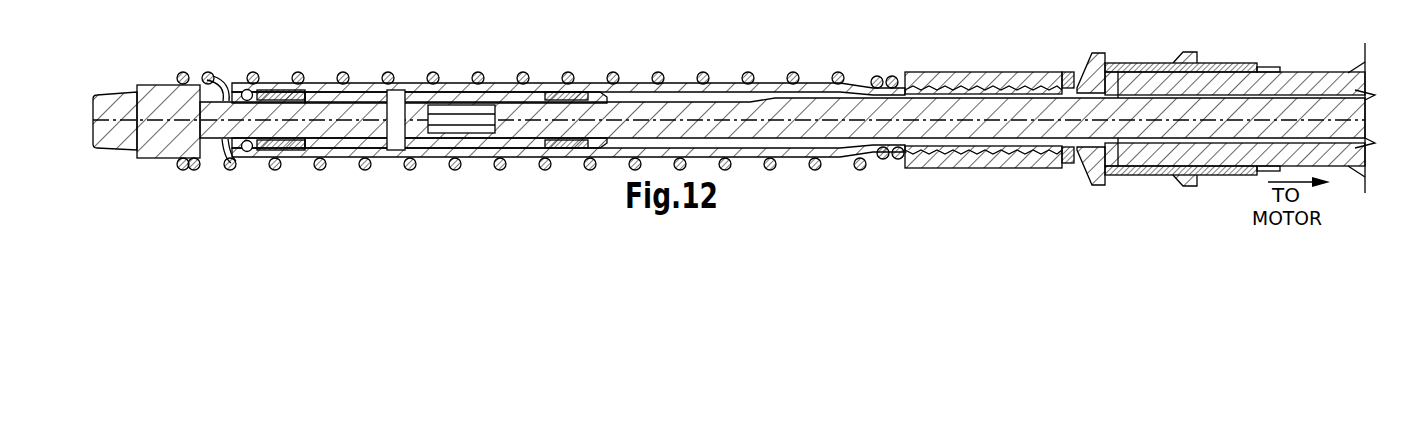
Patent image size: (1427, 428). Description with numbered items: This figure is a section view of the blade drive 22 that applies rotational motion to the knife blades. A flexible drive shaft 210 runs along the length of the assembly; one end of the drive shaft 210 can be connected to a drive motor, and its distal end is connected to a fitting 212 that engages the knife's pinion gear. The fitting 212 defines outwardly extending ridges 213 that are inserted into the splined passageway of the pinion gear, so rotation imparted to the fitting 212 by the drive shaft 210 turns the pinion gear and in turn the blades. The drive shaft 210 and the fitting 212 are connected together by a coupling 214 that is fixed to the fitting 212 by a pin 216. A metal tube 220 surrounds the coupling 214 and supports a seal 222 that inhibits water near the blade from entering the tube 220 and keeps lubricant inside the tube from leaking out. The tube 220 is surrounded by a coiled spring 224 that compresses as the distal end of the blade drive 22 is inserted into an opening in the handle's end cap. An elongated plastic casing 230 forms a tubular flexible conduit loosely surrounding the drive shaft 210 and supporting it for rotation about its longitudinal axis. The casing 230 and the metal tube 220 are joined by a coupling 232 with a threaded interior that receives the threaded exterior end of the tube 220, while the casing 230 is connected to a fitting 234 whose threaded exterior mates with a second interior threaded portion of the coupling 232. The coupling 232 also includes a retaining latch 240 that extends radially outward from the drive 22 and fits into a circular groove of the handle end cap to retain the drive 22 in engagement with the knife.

The blade drive 22 is at (882, 48).
The flexible drive shaft 210 is at (869, 124).
The fitting 212 is at (110, 142).
The outwardly extending ridges 213 is at (157, 84).
The coupling 214 is at (502, 96).
The pin 216 is at (398, 136).
The metal tube 220 is at (592, 86).
The seal 222 is at (250, 158).
The coiled spring 224 is at (343, 74).
The elongated plastic casing 230 is at (1318, 86).
The coupling 232 is at (1015, 168).
The fitting 234 is at (1120, 78).
The retaining latch 240 is at (1104, 180).